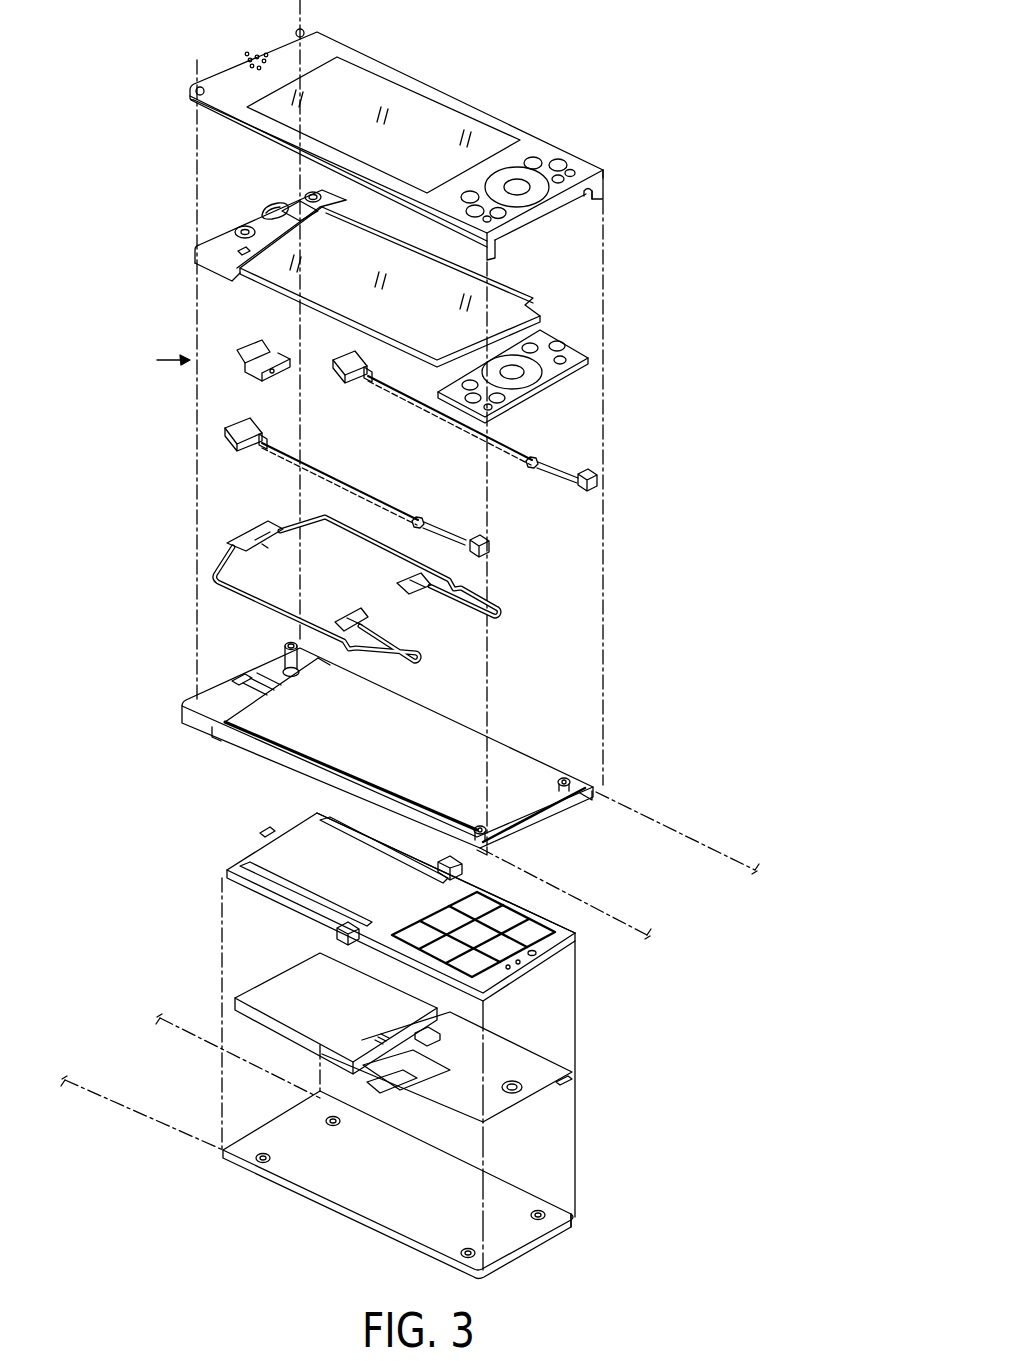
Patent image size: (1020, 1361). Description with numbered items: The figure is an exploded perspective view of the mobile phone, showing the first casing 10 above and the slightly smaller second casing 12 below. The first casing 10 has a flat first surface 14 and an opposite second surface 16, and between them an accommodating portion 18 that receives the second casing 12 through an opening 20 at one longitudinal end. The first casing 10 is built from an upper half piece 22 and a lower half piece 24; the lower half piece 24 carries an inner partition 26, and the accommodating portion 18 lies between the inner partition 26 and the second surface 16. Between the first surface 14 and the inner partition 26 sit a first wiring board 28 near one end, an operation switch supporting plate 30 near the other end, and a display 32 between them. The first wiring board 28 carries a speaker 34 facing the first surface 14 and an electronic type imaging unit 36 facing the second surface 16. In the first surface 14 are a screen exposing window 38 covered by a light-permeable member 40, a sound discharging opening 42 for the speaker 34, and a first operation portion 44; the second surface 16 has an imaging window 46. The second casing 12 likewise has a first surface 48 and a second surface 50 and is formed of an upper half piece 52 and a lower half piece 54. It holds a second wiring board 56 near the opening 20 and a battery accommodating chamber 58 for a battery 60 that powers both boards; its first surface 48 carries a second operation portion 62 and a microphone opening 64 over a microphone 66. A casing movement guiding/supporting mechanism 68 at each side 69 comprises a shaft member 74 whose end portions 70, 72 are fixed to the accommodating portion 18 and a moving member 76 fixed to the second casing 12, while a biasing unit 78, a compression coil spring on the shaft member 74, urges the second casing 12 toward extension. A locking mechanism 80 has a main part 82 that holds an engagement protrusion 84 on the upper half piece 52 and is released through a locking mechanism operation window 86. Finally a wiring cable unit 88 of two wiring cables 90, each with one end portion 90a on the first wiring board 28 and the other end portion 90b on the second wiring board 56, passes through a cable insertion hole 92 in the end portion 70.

The first casing 10 is at (718, 498).
The second casing 12 is at (648, 1065).
The first surface 14 is at (535, 145).
The second surface 16 is at (237, 748).
The accommodating portion 18 is at (553, 808).
The opening 20 is at (600, 200).
The upper half piece 22 is at (605, 170).
The lower half piece 24 is at (605, 782).
The inner partition 26 is at (510, 748).
The first wiring board 28 is at (220, 243).
The operation switch supporting plate 30 is at (553, 337).
The display 32 is at (505, 288).
The speaker 34 is at (245, 227).
The electronic type imaging unit 36 is at (293, 202).
The screen exposing window 38 is at (408, 104).
The light-permeable member 40 is at (456, 115).
The sound discharging opening 42 is at (253, 58).
The first operation portion 44 is at (532, 196).
The imaging window 46 is at (289, 668).
The first surface 48 is at (262, 860).
The second surface 50 is at (330, 1205).
The upper half piece 52 is at (575, 935).
The lower half piece 54 is at (555, 1200).
The second wiring board 56 is at (550, 1068).
The battery accommodating chamber 58 is at (300, 1150).
The battery 60 is at (268, 1018).
The second operation portion 62 is at (515, 946).
The microphone opening 64 is at (565, 960).
The microphone 66 is at (512, 1094).
The casing movement guiding/supporting mechanism 68 is at (414, 424).
The side 69 is at (604, 792).
The one end portion 70 is at (346, 384).
The other end portion 72 is at (596, 478).
The shaft member 74 is at (542, 470).
The moving member 76 is at (445, 858).
The biasing unit 78 is at (536, 461).
The locking mechanism 80 is at (157, 362).
The main part 82 is at (240, 350).
The engagement protrusion 84 is at (263, 832).
The locking mechanism operation window 86 is at (240, 677).
The wiring cable unit 88 is at (430, 647).
The wiring cable 90 is at (352, 538).
The one end portion 90a is at (235, 542).
The other end portion 90b is at (370, 615).
The cable insertion hole 92 is at (374, 380).